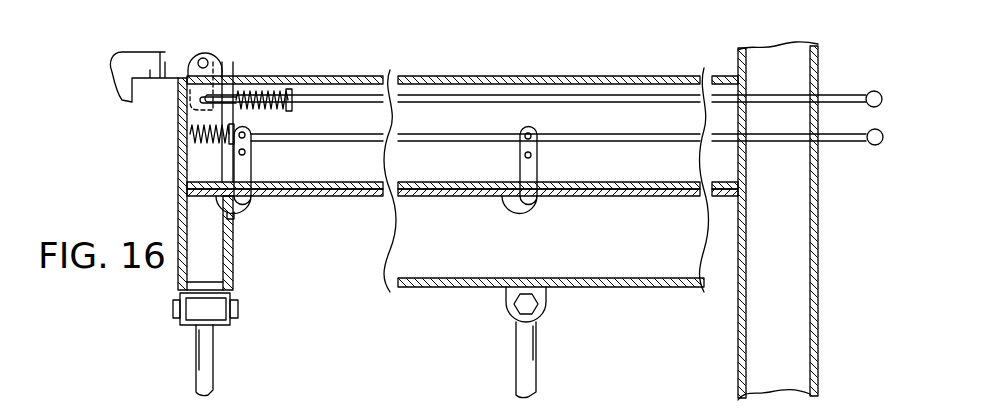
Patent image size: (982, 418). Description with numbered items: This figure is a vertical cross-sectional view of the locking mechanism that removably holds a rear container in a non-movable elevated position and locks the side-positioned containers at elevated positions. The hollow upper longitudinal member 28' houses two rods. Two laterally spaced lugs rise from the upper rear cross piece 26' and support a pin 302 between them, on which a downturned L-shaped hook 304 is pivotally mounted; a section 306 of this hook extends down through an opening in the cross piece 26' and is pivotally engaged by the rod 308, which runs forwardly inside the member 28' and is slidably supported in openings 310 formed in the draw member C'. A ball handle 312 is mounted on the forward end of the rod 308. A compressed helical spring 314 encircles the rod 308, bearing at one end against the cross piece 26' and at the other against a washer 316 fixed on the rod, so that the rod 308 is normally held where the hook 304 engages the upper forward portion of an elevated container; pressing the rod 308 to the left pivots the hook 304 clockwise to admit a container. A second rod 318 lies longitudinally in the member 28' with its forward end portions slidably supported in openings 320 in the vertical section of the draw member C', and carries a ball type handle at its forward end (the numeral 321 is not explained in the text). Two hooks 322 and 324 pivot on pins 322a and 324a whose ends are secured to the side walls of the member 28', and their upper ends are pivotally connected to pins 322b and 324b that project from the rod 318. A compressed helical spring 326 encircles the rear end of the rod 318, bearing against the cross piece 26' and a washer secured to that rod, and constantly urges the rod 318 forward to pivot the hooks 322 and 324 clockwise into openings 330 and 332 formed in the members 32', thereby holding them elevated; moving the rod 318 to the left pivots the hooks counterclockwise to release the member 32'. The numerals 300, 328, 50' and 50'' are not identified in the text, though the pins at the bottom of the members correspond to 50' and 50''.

The upper rear cross piece 26' is at (178, 176).
The upper longitudinal member 28' is at (462, 170).
The member 32' is at (445, 258).
The pin 50' is at (543, 342).
The pin 50'' is at (217, 344).
The pivot 300 is at (218, 68).
The pin 302 is at (206, 58).
The downturned L-shaped hook 304 is at (155, 51).
The section 306 is at (180, 104).
The rod 308 is at (330, 103).
The openings 310 is at (810, 93).
The ball handle 312 is at (866, 93).
The compressed helical spring 314 is at (257, 86).
The washer 316 is at (292, 84).
The second rod 318 is at (326, 141).
The openings 320 is at (812, 142).
The knob 321 is at (868, 144).
The hook 322 is at (557, 169).
The pin 322a is at (533, 155).
The pin 322b is at (532, 135).
The hook 324 is at (262, 165).
The pin 324a is at (247, 152).
The pin 324b is at (246, 134).
The compressed helical spring 326 is at (226, 148).
The washer 328 is at (232, 154).
The opening 330 is at (540, 200).
The opening 332 is at (246, 210).
The draw member C' is at (799, 221).